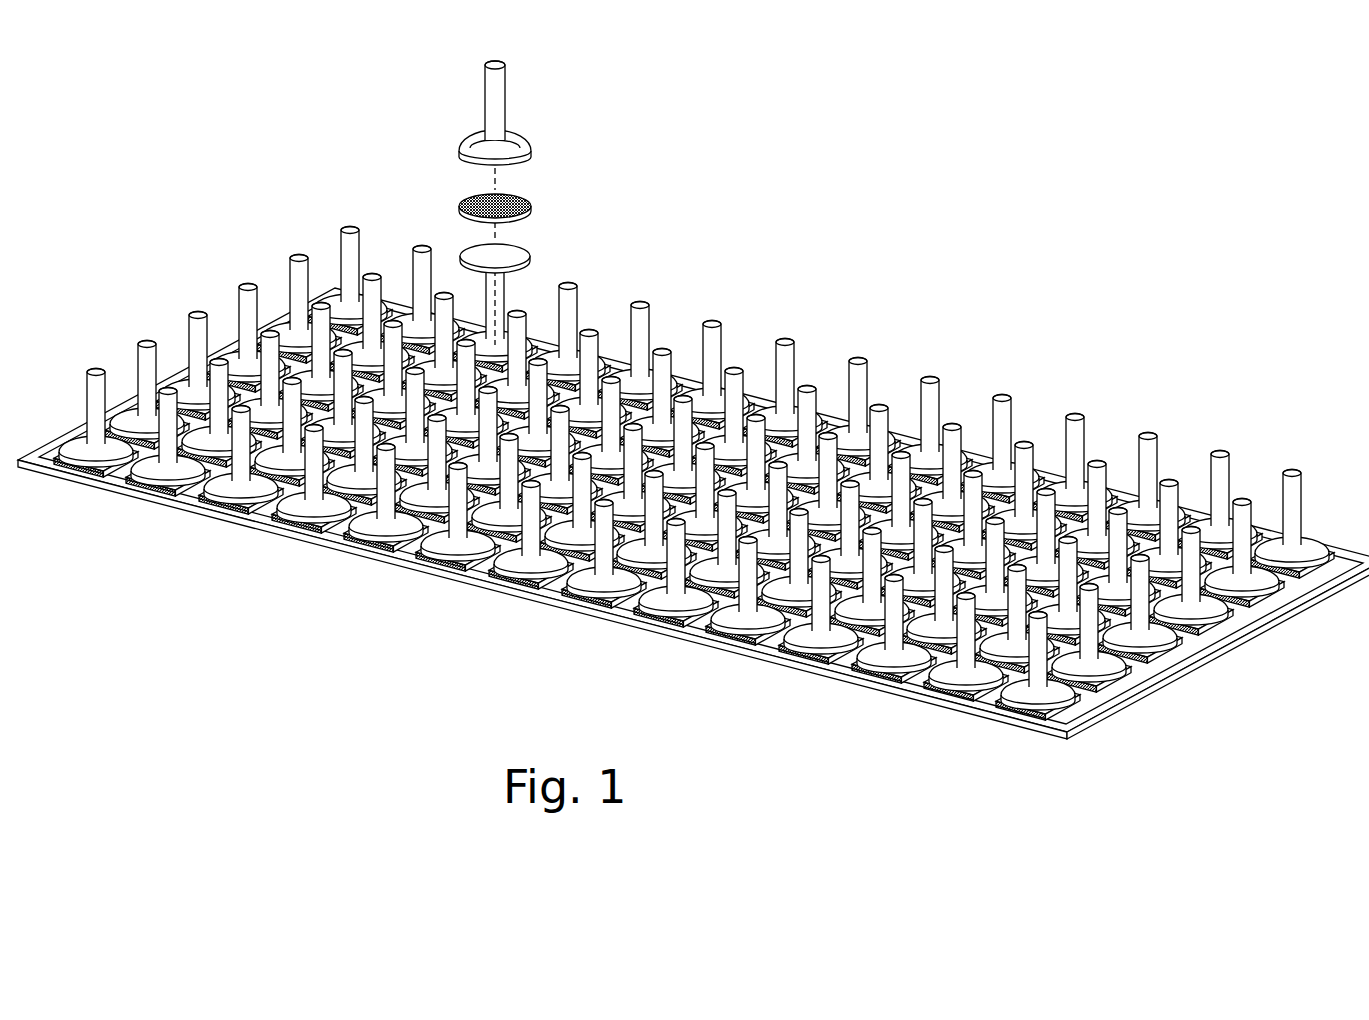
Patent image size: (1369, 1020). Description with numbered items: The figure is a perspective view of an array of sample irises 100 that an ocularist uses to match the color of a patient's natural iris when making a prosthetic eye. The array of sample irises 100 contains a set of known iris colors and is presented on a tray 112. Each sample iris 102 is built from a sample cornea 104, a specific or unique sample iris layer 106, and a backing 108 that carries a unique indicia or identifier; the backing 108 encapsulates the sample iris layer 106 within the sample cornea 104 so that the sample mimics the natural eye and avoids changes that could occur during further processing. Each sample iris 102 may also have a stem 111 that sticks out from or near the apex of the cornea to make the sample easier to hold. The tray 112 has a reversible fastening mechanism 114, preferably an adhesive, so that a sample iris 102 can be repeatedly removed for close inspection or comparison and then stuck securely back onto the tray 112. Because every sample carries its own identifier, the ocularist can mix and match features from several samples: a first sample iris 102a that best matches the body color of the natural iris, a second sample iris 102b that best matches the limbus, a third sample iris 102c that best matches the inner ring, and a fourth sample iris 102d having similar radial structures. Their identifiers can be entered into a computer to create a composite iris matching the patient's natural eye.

The array of sample irises 100 is at (228, 204).
The sample iris 102 is at (363, 226).
The first sample iris 102a is at (1017, 674).
The second sample iris 102b is at (1128, 672).
The third sample iris 102c is at (925, 686).
The fourth sample iris 102d is at (1143, 678).
The sample cornea 104 is at (516, 147).
The sample iris layer 106 is at (531, 199).
The backing 108 is at (529, 253).
The stem 111 is at (508, 116).
The tray 112 is at (121, 488).
The reversible fastening mechanism 114 is at (259, 515).